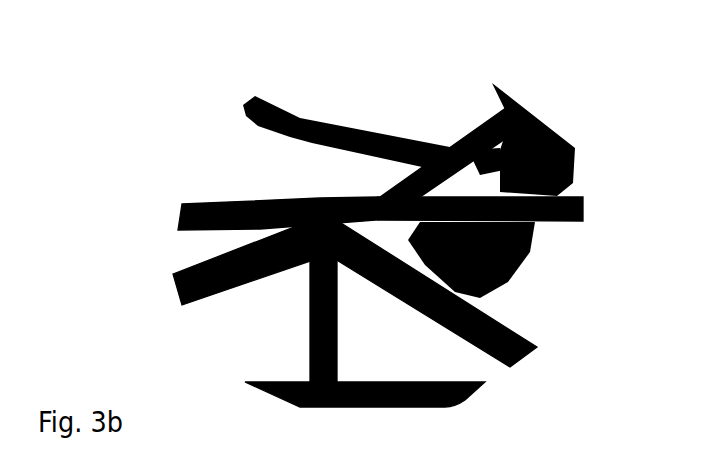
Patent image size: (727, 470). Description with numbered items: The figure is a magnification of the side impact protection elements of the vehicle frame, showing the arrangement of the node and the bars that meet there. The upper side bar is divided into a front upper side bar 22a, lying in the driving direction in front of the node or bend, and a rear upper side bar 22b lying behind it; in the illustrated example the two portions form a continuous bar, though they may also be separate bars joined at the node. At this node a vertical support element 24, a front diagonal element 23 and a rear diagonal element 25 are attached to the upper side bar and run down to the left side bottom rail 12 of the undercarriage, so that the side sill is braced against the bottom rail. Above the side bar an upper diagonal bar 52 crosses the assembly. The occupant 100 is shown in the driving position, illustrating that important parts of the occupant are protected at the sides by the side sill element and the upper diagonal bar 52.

The left side bottom rail 12 is at (405, 407).
The front upper side bar 22a is at (182, 207).
The rear upper side bar 22b is at (592, 203).
The front diagonal element 23 is at (175, 287).
The support element 24 is at (338, 360).
The rear diagonal element 25 is at (520, 335).
The upper diagonal bar 52 is at (521, 103).
The occupant 100 is at (480, 257).